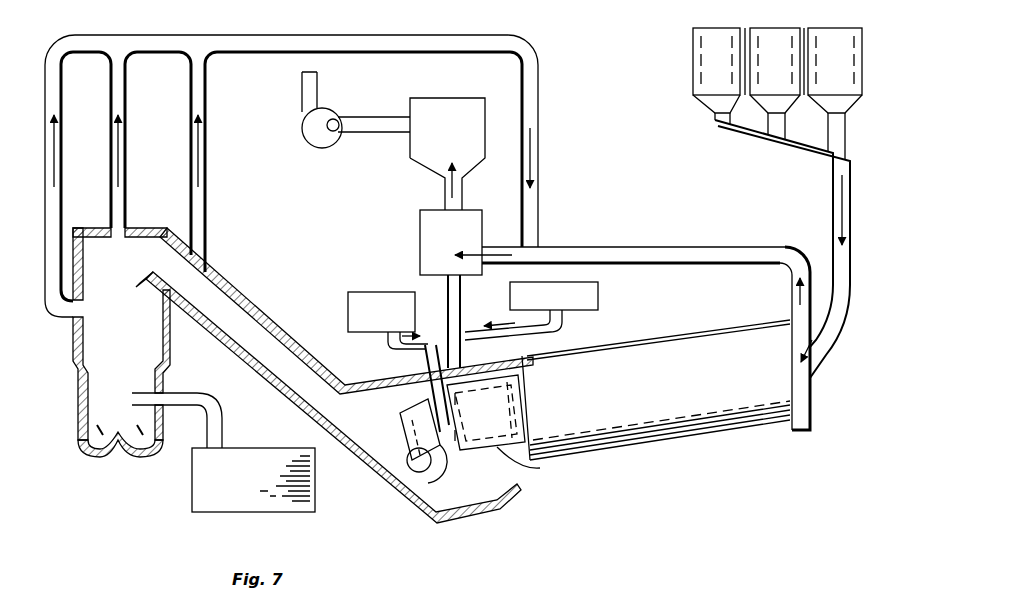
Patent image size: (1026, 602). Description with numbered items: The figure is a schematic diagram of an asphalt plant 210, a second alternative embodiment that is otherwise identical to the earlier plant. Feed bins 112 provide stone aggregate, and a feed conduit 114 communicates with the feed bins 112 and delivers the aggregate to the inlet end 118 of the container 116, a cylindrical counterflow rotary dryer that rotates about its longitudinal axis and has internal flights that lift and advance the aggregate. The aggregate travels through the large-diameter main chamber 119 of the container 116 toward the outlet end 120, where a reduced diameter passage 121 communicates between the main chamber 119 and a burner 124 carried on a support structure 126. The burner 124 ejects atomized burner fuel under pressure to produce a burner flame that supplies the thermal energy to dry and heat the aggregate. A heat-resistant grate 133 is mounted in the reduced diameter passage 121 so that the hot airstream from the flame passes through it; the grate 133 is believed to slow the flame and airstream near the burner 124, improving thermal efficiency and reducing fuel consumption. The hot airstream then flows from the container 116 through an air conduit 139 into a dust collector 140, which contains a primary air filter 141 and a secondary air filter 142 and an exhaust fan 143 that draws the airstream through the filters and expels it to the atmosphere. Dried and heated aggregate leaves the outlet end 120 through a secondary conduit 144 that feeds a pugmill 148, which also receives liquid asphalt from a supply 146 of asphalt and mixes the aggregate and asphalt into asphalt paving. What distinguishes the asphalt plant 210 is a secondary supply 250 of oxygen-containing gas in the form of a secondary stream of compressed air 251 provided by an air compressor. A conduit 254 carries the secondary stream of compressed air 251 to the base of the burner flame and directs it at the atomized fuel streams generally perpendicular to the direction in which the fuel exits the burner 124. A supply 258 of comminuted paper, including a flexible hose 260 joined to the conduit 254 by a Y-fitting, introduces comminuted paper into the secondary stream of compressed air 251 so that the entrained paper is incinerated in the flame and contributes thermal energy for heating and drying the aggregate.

The feed bins 112 is at (794, 72).
The feed conduit 114 is at (838, 188).
The container 116 is at (681, 344).
The inlet end 118 is at (803, 396).
The main chamber 119 is at (689, 424).
The outlet end 120 is at (474, 462).
The reduced diameter passage 121 is at (534, 463).
The burner 124 is at (412, 444).
The support structure 126 is at (443, 474).
The grate 133 is at (522, 399).
The air conduit 139 is at (664, 252).
The dust collector 140 is at (402, 165).
The primary air filter 141 is at (467, 245).
The secondary air filter 142 is at (464, 137).
The exhaust fan 143 is at (313, 141).
The secondary conduit 144 is at (428, 455).
The supply of asphalt 146 is at (262, 487).
The pugmill 148 is at (136, 356).
The asphalt plant 210 is at (612, 133).
The secondary supply 250 is at (562, 308).
The secondary stream of compressed air 251 is at (531, 327).
The conduit 254 is at (496, 302).
The supply of comminuted paper 258 is at (394, 324).
The flexible hose 260 is at (390, 343).